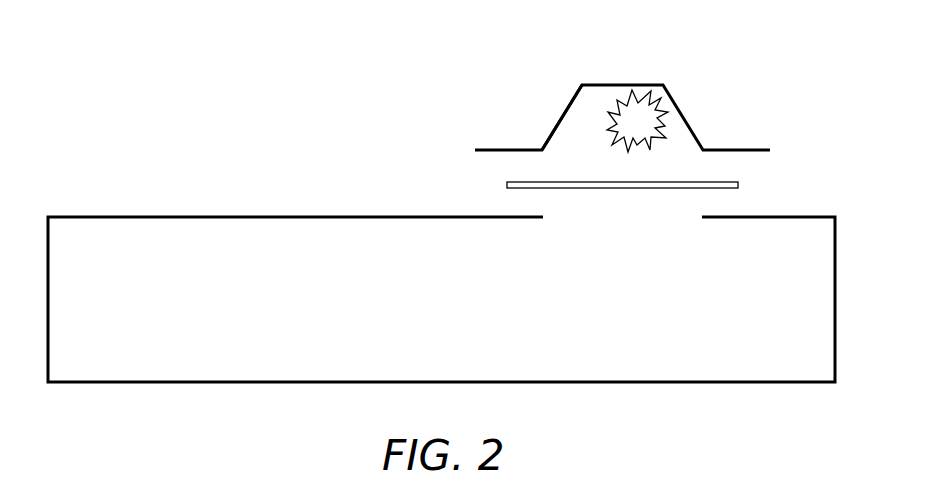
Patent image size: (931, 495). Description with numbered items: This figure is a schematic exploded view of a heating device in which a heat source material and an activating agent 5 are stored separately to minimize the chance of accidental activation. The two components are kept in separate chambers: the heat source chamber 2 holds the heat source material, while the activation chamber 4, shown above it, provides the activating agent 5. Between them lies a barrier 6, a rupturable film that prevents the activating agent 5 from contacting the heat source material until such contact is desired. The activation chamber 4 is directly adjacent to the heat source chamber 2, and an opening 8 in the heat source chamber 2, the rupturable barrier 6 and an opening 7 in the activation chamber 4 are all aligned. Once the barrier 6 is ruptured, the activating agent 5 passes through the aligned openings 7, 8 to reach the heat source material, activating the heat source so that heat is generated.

The heat source chamber 2 is at (818, 383).
The activation chamber 4 is at (683, 112).
The activating agent 5 is at (633, 115).
The barrier 6 is at (507, 188).
The opening 7 is at (580, 150).
The opening 8 is at (622, 219).